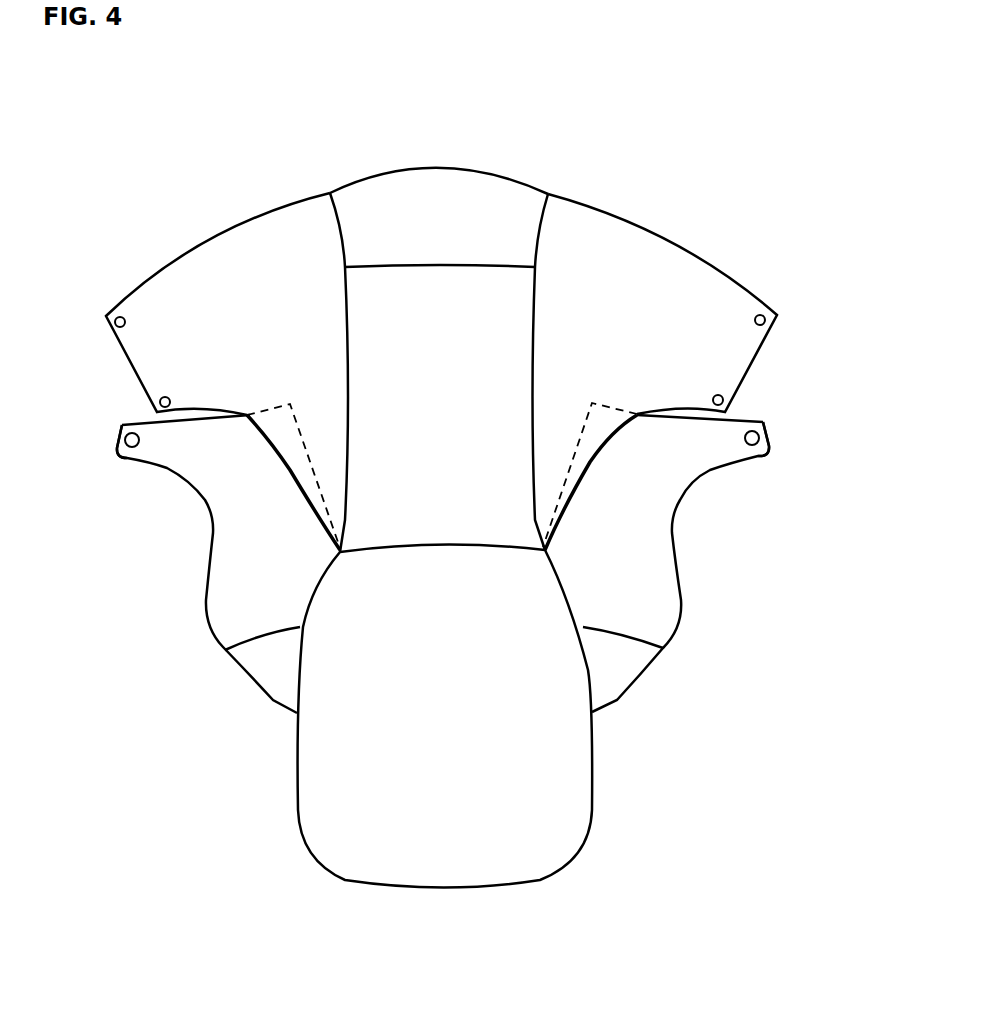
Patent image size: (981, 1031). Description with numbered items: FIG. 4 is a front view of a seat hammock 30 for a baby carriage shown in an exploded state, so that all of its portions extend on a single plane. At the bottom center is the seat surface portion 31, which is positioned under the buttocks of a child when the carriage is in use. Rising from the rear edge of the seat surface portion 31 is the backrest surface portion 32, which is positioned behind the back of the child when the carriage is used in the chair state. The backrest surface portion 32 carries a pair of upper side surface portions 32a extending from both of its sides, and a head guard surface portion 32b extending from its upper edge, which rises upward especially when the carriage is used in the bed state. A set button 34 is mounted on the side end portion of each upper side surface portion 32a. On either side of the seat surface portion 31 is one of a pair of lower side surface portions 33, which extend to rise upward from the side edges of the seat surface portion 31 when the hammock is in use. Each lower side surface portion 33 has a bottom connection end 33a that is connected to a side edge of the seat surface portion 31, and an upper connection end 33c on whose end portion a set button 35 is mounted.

The seat hammock 30 is at (668, 157).
The seat surface portion 31 is at (552, 778).
The backrest surface portion 32 is at (499, 345).
The upper side surface portion 32a is at (195, 298).
The head guard surface portion 32b is at (437, 200).
The lower side surface portion 33 is at (242, 525).
The bottom connection end 33a is at (227, 648).
The upper connection end 33c is at (132, 456).
The set button 34 is at (764, 317).
The set button 35 is at (122, 425).